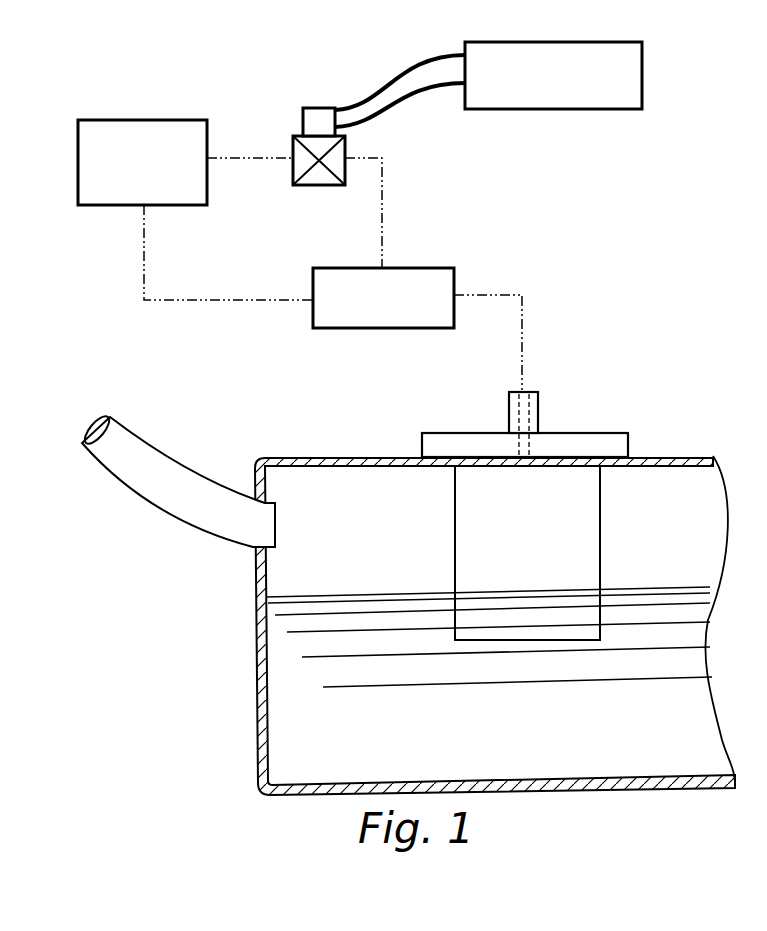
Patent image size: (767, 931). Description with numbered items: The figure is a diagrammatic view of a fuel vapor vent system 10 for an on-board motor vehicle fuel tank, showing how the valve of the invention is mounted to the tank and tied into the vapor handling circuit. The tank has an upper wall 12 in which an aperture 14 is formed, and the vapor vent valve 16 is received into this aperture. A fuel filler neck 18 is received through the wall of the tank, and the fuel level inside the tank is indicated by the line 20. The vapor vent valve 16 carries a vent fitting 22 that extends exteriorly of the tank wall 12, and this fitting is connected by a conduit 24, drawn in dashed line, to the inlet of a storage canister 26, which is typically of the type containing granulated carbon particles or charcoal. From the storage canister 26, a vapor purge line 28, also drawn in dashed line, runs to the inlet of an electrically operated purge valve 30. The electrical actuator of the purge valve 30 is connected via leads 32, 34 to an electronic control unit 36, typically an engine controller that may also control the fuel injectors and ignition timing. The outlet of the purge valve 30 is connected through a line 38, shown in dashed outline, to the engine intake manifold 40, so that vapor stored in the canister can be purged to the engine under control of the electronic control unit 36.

The fuel vapor vent system 10 is at (628, 272).
The upper wall 12 is at (331, 460).
The aperture 14 is at (462, 457).
The vapor vent valve 16 is at (441, 516).
The fuel filler neck 18 is at (168, 461).
The fuel level line 20 is at (387, 594).
The vent fitting 22 is at (540, 412).
The conduit 24 is at (492, 294).
The storage canister 26 is at (437, 268).
The vapor purge line 28 is at (382, 206).
The purge valve 30 is at (293, 148).
The lead 32 is at (384, 92).
The lead 34 is at (415, 92).
The electronic control unit 36 is at (587, 109).
The line 38 is at (242, 162).
The engine intake manifold 40 is at (143, 119).